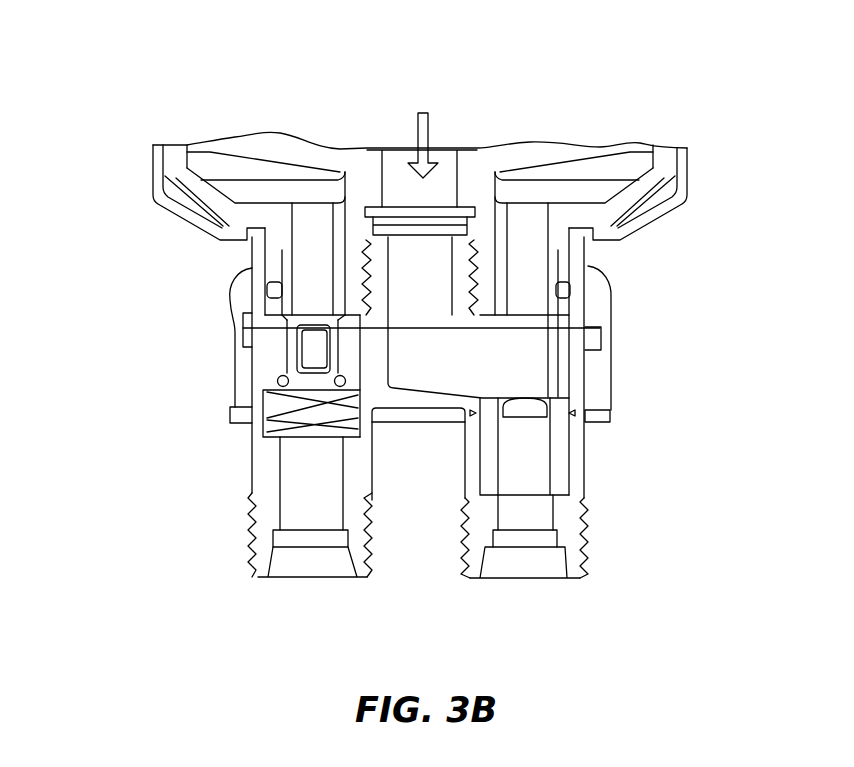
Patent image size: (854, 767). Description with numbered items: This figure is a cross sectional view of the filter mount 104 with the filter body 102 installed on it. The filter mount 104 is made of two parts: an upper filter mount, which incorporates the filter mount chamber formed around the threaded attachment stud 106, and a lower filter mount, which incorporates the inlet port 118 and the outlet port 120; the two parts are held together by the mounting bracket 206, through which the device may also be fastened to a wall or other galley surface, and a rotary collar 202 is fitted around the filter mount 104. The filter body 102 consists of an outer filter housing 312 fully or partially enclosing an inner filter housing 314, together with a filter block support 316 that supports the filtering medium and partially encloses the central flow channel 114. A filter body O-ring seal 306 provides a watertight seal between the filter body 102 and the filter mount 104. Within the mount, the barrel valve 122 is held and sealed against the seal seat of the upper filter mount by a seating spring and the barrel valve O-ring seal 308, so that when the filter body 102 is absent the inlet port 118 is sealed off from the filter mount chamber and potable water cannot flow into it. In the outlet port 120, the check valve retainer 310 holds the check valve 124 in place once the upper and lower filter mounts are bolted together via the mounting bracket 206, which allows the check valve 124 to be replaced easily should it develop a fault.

The filter mount 104 is at (78, 80).
The filter body 102 is at (128, 285).
The threaded attachment stud 106 is at (378, 268).
The central flow channel 114 is at (423, 132).
The filter block support 316 is at (505, 158).
The inner filter housing 314 is at (662, 162).
The outer filter housing 312 is at (677, 203).
The filter body O-ring seal 306 is at (253, 300).
The barrel valve 122 is at (310, 362).
The barrel valve O-ring seal 308 is at (275, 380).
The inlet port 118 is at (265, 505).
The check valve 124 is at (523, 447).
The outlet port 120 is at (567, 517).
The mounting bracket 206 is at (597, 295).
The check valve retainer 310 is at (563, 357).
The rotary collar 202 is at (592, 397).